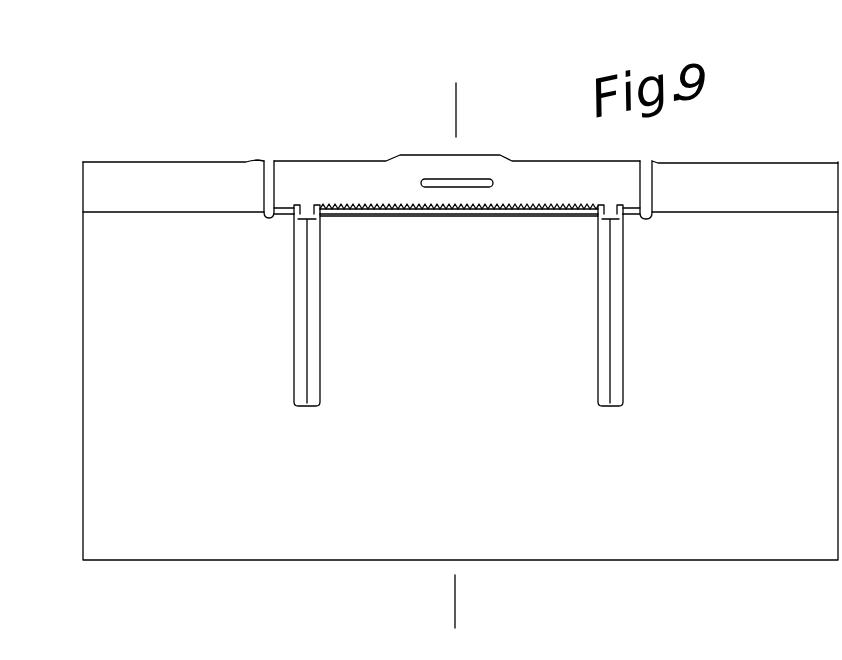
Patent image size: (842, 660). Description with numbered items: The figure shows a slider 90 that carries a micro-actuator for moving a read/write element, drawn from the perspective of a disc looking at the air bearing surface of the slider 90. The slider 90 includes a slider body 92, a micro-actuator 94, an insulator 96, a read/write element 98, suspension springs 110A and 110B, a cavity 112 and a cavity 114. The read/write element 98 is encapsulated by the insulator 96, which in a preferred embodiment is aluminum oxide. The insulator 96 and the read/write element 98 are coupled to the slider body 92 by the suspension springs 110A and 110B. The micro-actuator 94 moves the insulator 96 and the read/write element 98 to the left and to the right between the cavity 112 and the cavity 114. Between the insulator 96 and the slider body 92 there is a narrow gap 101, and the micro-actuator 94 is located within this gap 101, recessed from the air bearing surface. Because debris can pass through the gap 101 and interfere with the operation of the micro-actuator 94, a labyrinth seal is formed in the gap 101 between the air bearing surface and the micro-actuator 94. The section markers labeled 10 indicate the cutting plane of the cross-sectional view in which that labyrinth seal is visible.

The slider 90 is at (118, 104).
The slider body 92 is at (95, 267).
The micro-actuator 94 is at (351, 208).
The insulator 96 is at (371, 165).
The read/write element 98 is at (493, 180).
The gap 101 is at (496, 220).
The suspension spring 110A is at (307, 290).
The suspension spring 110B is at (612, 301).
The cavity 112 is at (268, 153).
The cavity 114 is at (649, 154).
The section line 10 is at (452, 105).